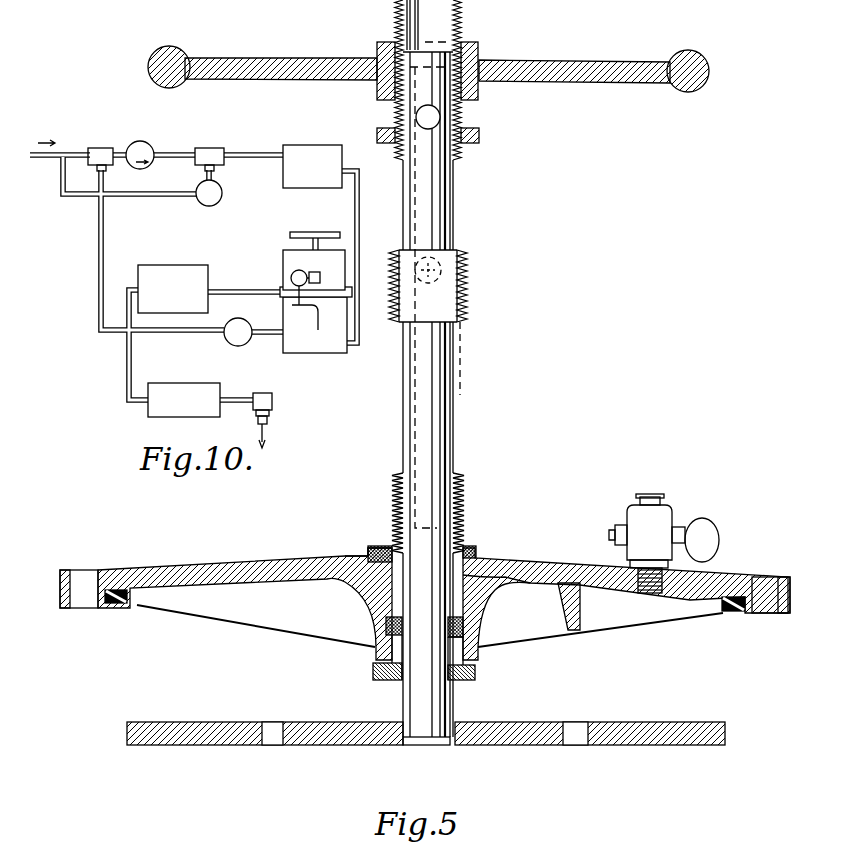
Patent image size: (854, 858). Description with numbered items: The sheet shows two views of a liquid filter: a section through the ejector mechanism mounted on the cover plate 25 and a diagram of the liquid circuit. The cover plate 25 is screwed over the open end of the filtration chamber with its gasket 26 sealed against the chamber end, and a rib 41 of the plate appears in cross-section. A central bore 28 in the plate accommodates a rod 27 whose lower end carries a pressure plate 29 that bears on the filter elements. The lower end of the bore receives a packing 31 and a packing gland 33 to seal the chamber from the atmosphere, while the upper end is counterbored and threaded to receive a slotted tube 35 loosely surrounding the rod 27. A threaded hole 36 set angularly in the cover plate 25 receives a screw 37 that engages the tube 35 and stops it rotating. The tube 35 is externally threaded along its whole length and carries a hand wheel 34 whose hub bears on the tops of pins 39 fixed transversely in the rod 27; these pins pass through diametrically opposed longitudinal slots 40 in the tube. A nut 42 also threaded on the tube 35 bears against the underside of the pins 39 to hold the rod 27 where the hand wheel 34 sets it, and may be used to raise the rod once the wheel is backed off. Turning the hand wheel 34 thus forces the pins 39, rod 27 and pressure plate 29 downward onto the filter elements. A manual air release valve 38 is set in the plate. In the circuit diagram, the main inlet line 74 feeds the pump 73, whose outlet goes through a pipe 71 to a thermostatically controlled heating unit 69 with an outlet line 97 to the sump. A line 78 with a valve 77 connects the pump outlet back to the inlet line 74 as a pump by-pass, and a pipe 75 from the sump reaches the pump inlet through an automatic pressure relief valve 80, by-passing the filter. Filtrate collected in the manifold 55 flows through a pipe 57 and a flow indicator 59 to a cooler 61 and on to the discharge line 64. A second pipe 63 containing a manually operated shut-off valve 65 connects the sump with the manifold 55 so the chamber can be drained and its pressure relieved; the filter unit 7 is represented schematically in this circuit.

In FIG. 10, the filter unit 7 is at (325, 306).
In FIG. 5, the cover plate 25 is at (200, 570).
In FIG. 5, the gasket 26 is at (732, 612).
In FIG. 5, the rod 27 is at (433, 443).
In FIG. 5, the central bore 28 is at (478, 604).
In FIG. 5, the pressure plate 29 is at (200, 722).
In FIG. 5, the packing 31 is at (478, 628).
In FIG. 5, the packing gland 33 is at (476, 672).
In FIG. 5, the hand wheel 34 is at (312, 64).
In FIG. 5, the slotted tube 35 is at (466, 300).
In FIG. 5, the threaded hole 36 is at (355, 560).
In FIG. 5, the screw 37 is at (378, 546).
In FIG. 5, the manual air release valve 38 is at (656, 516).
In FIG. 5, the pins 39 is at (441, 117).
In FIG. 5, the longitudinal slots 40 is at (440, 225).
In FIG. 5, the rib 41 is at (581, 605).
In FIG. 5, the nut 42 is at (467, 140).
In FIG. 10, the manifold 55 is at (352, 292).
In FIG. 10, the pipe 57 is at (225, 290).
In FIG. 10, the flow indicator 59 is at (178, 260).
In FIG. 10, the cooler 61 is at (180, 383).
In FIG. 10, the second pipe 63 is at (299, 311).
In FIG. 10, the discharge line 64 is at (270, 416).
In FIG. 10, the shut-off valve 65 is at (291, 278).
In FIG. 10, the heating unit 69 is at (318, 139).
In FIG. 10, the pipe 71 is at (249, 152).
In FIG. 10, the pump 73 is at (150, 139).
In FIG. 10, the main inlet line 74 is at (69, 151).
In FIG. 10, the pipe 75 is at (98, 246).
In FIG. 10, the valve 77 is at (223, 194).
In FIG. 10, the line 78 is at (166, 198).
In FIG. 10, the automatic pressure relief valve 80 is at (243, 346).
In FIG. 10, the outlet line 97 is at (357, 209).